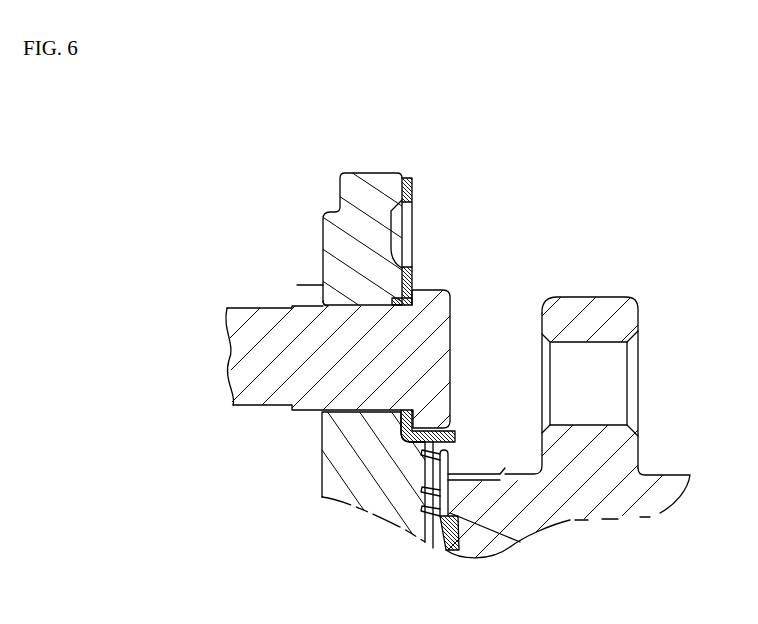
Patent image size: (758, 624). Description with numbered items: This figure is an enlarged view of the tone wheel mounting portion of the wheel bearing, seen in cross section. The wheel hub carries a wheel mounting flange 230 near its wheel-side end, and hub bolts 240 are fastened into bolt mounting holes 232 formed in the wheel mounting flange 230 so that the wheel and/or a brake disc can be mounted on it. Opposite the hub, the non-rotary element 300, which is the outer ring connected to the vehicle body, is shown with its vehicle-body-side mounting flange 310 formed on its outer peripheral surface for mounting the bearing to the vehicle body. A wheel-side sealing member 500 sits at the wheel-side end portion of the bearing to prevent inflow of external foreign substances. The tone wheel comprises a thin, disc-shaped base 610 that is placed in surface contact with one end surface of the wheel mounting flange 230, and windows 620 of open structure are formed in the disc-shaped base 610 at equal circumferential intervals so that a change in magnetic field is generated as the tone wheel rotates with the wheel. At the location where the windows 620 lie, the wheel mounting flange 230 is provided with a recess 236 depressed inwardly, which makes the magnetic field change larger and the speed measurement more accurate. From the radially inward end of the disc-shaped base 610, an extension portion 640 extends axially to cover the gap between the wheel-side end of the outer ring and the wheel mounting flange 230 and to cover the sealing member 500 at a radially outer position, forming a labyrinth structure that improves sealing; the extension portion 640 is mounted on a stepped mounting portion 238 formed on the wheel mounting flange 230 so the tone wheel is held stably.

The wheel mounting flange 230 is at (330, 240).
The bolt mounting holes 232 is at (318, 285).
The recess 236 is at (372, 198).
The stepped mounting portion 238 is at (418, 443).
The hub bolts 240 is at (262, 362).
The non-rotary element 300 is at (594, 500).
The vehicle-body-side mounting flange 310 is at (611, 303).
The sealing member 500 is at (478, 472).
The disc-shaped base 610 is at (413, 278).
The windows 620 is at (410, 225).
The extension portion 640 is at (458, 434).